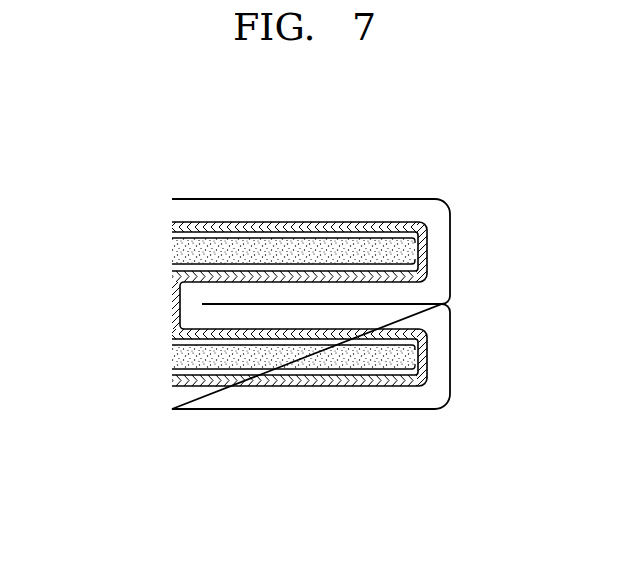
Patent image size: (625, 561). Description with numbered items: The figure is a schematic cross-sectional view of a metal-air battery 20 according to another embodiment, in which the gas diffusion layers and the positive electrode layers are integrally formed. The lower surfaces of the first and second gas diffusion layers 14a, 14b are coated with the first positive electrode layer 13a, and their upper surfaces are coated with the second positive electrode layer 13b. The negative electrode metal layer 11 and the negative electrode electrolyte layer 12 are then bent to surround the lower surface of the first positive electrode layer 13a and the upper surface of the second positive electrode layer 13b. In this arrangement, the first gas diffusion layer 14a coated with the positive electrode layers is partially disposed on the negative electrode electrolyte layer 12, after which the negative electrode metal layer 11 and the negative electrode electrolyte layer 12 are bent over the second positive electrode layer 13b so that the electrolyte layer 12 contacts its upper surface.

The metal-air battery 20 is at (438, 163).
The negative electrode metal layer 11 is at (178, 205).
The negative electrode electrolyte layer 12 is at (178, 223).
The first positive electrode layer 13a is at (178, 270).
The second positive electrode layer 13b is at (180, 235).
The first gas diffusion layer 14a is at (176, 357).
The second gas diffusion layer 14b is at (180, 254).